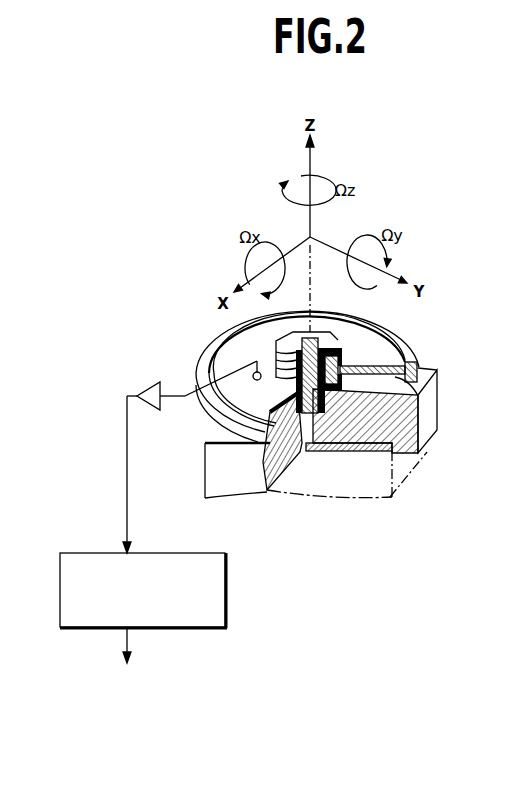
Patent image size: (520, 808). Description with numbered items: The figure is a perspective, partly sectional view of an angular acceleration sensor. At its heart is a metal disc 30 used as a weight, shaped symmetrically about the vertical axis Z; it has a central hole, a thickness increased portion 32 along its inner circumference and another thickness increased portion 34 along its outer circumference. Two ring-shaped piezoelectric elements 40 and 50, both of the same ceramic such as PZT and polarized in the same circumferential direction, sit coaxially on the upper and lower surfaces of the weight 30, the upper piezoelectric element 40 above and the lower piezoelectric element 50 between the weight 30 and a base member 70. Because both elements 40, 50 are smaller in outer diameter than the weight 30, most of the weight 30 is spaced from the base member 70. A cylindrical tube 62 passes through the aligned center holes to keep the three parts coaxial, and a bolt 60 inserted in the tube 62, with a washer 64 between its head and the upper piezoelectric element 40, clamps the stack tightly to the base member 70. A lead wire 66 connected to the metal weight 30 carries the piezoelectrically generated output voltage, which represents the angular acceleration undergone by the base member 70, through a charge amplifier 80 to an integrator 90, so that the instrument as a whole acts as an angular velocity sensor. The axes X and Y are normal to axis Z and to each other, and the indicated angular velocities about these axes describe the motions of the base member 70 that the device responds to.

The metal disc 30 is at (428, 399).
The thickness increased portion 32 is at (412, 356).
The thickness increased portion 34 is at (207, 350).
The piezoelectric element 40 is at (345, 365).
The piezoelectric element 50 is at (428, 423).
The bolt 60 is at (334, 326).
The cylindrical tube 62 is at (343, 441).
The washer 64 is at (342, 357).
The lead wire 66 is at (188, 399).
The base member 70 is at (222, 471).
The charge amplifier 80 is at (147, 384).
The integrator 90 is at (84, 553).